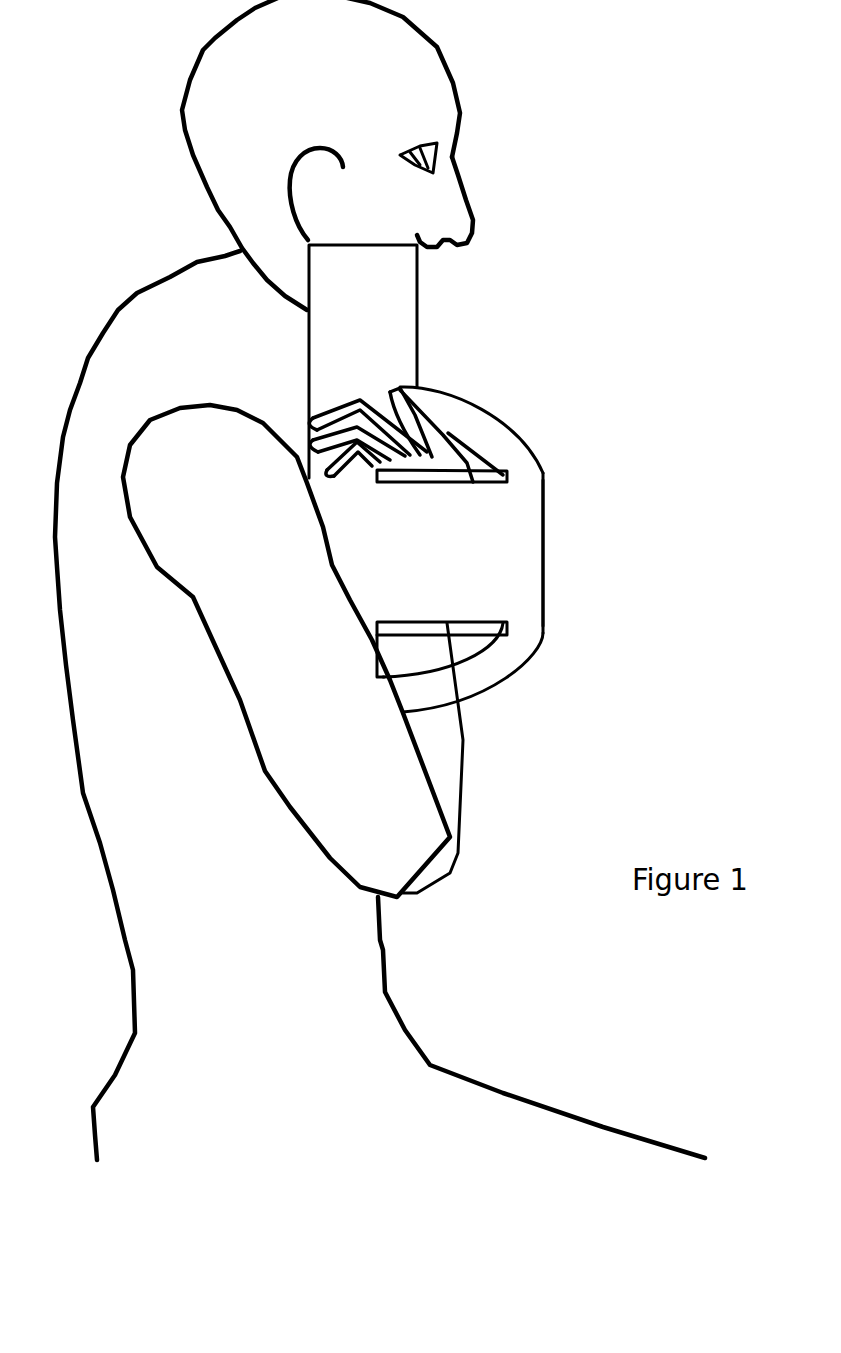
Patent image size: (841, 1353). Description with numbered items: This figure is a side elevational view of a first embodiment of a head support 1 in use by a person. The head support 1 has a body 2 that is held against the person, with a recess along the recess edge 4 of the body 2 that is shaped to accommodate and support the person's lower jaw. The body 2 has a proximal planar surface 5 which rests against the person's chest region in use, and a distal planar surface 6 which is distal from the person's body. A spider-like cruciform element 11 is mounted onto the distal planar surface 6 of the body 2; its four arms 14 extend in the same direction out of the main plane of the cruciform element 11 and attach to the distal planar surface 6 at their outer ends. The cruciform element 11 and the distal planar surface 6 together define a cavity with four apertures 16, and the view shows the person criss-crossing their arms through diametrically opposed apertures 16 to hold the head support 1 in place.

The head support 1 is at (587, 317).
The body 2 is at (395, 340).
The recess edge 4 is at (383, 243).
The proximal planar surface 5 is at (307, 378).
The distal planar surface 6 is at (417, 372).
The spider-like cruciform element 11 is at (523, 540).
The arms 14 is at (482, 423).
The apertures 16 is at (480, 460).